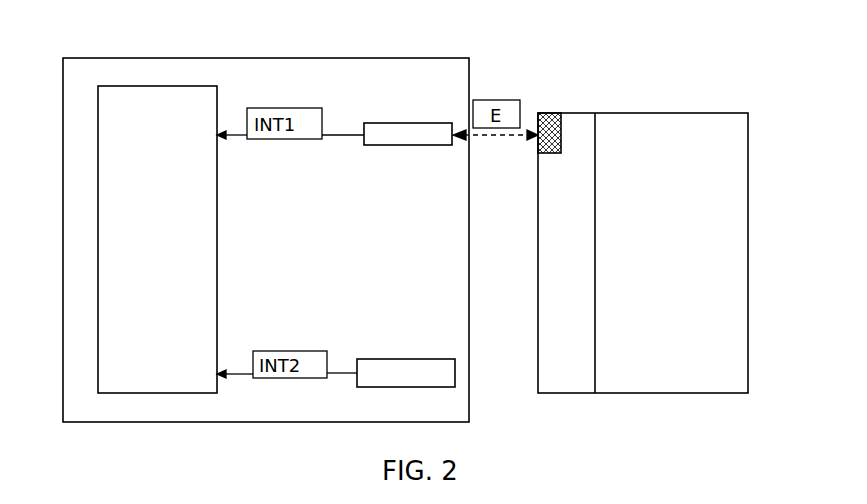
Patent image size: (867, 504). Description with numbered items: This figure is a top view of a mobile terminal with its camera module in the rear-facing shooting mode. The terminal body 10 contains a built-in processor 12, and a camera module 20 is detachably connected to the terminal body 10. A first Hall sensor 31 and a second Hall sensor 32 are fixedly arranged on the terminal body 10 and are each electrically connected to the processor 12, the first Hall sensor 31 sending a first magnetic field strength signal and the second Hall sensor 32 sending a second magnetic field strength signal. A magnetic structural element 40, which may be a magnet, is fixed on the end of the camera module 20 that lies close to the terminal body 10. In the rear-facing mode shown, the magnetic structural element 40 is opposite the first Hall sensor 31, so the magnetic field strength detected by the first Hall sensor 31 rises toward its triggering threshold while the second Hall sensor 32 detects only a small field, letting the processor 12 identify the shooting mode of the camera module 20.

The terminal body 10 is at (288, 58).
The processor 12 is at (218, 272).
The camera module 20 is at (692, 113).
The first Hall sensor 31 is at (392, 123).
The second Hall sensor 32 is at (385, 359).
The magnetic structural element 40 is at (557, 113).